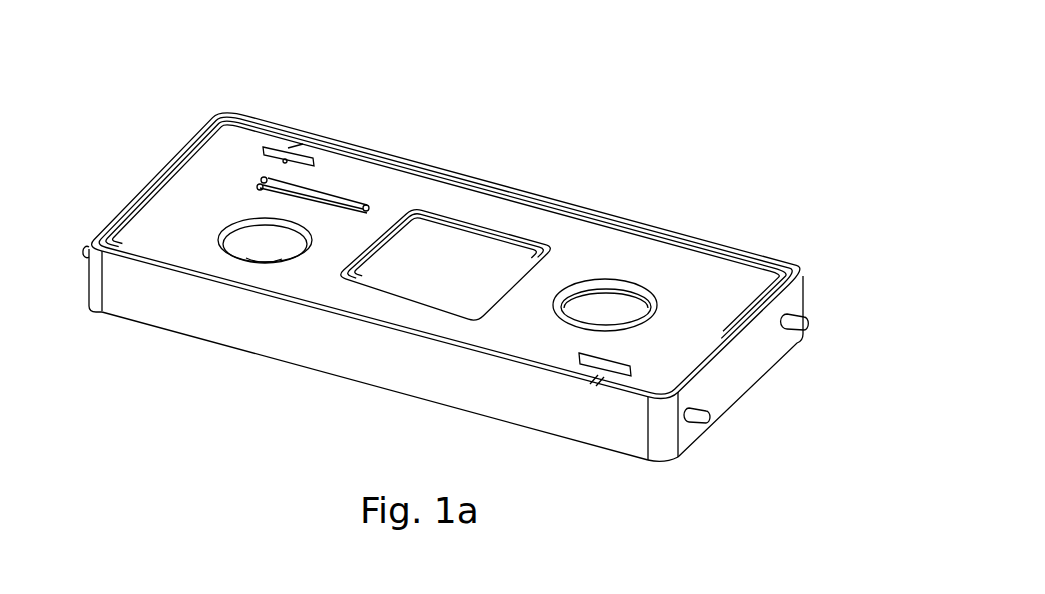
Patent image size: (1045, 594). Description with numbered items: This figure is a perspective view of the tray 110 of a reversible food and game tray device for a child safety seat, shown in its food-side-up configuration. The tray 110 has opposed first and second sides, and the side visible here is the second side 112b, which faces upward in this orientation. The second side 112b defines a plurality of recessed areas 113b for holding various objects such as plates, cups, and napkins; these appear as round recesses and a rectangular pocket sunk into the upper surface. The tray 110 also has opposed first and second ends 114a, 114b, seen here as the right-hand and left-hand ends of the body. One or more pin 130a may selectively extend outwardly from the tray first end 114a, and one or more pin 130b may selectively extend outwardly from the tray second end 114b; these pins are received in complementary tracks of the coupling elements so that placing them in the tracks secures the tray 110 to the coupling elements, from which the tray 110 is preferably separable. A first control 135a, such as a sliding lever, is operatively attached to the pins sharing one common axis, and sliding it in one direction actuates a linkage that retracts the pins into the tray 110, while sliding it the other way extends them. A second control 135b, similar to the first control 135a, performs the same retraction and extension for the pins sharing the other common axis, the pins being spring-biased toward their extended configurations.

The tray 110 is at (648, 107).
The second side 112b is at (404, 190).
The recessed areas 113b is at (228, 254).
The first end 114a is at (757, 388).
The second end 114b is at (164, 167).
The pin 130a is at (800, 313).
The pin 130b is at (86, 247).
The first control 135a is at (603, 370).
The second control 135b is at (276, 150).